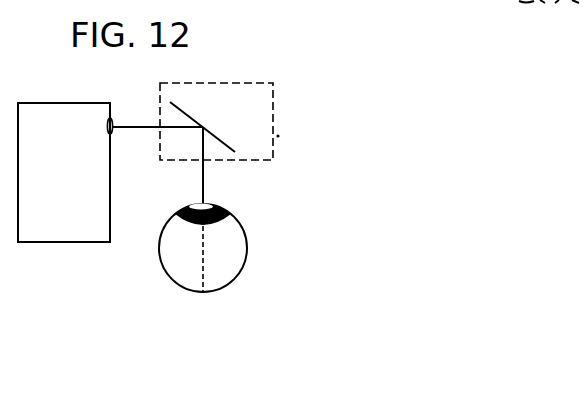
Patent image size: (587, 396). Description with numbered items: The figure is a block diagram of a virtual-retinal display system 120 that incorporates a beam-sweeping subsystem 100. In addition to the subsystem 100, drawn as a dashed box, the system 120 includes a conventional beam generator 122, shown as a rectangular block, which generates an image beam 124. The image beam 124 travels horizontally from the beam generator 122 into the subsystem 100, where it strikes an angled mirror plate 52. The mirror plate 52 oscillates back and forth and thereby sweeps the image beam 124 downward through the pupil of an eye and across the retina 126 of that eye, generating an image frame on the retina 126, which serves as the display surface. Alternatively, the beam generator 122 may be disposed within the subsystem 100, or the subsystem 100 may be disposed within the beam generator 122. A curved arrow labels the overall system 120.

The beam generator 122 is at (80, 180).
The image beam 124 is at (133, 126).
The beam-sweeping subsystem 100 is at (255, 161).
The mirror plate 52 is at (222, 132).
The retina 126 is at (200, 292).
The virtual-retinal display system 120 is at (105, 263).